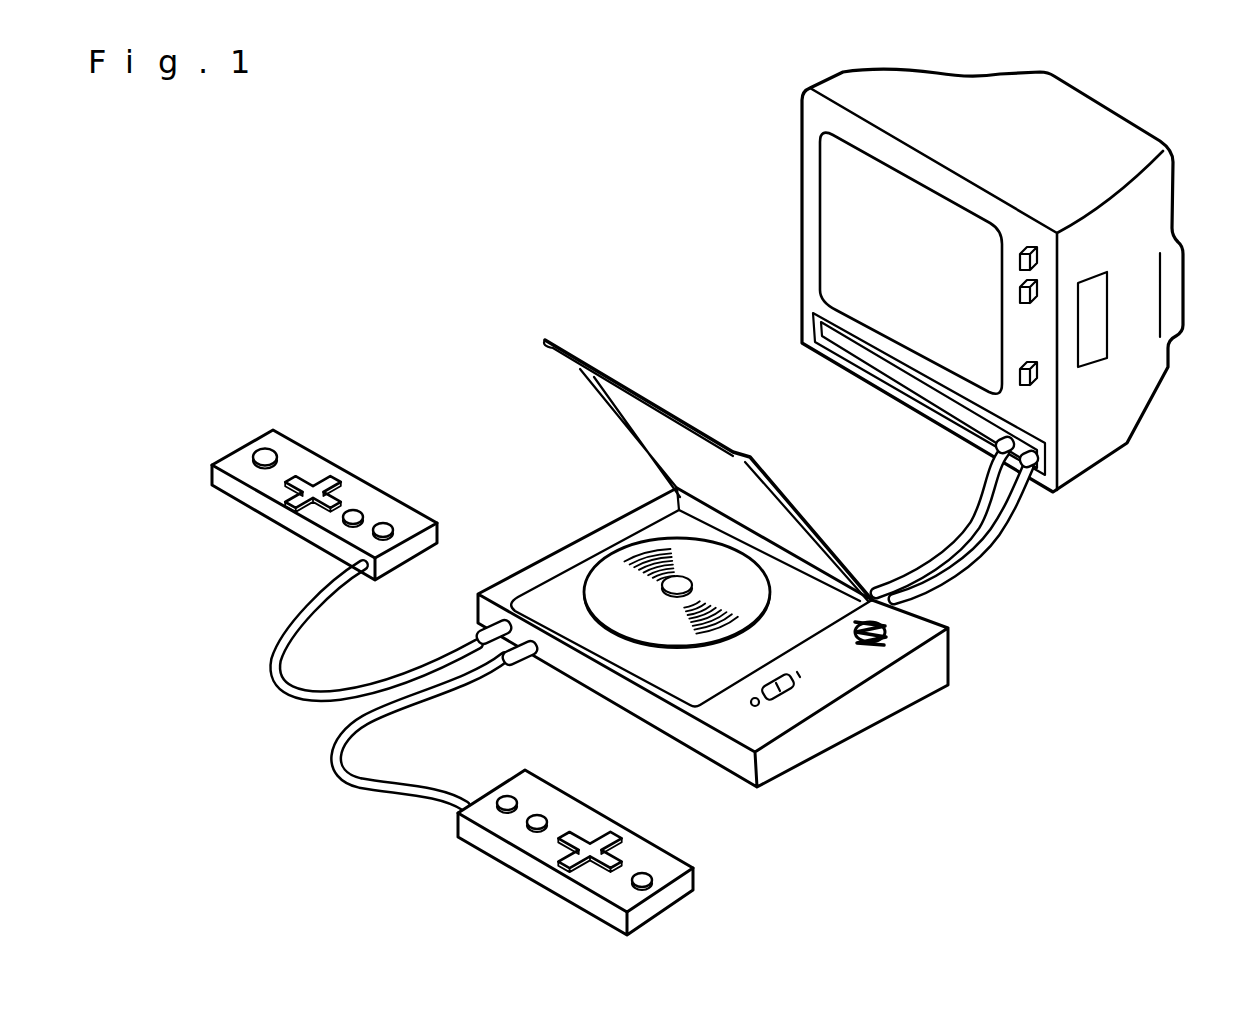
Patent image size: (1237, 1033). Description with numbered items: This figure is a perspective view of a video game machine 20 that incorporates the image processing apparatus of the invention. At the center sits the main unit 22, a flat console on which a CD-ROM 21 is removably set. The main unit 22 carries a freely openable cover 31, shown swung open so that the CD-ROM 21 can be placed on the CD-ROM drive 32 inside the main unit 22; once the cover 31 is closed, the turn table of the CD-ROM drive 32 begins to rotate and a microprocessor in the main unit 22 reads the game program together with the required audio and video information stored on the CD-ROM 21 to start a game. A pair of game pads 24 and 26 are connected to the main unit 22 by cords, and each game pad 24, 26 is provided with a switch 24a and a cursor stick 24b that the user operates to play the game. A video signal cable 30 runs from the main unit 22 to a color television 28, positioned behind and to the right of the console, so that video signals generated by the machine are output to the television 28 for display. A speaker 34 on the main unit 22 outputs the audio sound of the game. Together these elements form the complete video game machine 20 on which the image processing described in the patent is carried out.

The video game machine 20 is at (685, 502).
The CD-ROM 21 is at (623, 563).
The main unit 22 is at (747, 530).
The game pad 24 is at (350, 525).
The switch 24a is at (260, 447).
The cursor stick 24b is at (290, 493).
The game pad 26 is at (502, 865).
The color television 28 is at (1100, 447).
The video signal cable 30 is at (983, 547).
The cover 31 is at (617, 367).
The CD-ROM drive 32 is at (523, 553).
The speaker 34 is at (885, 623).